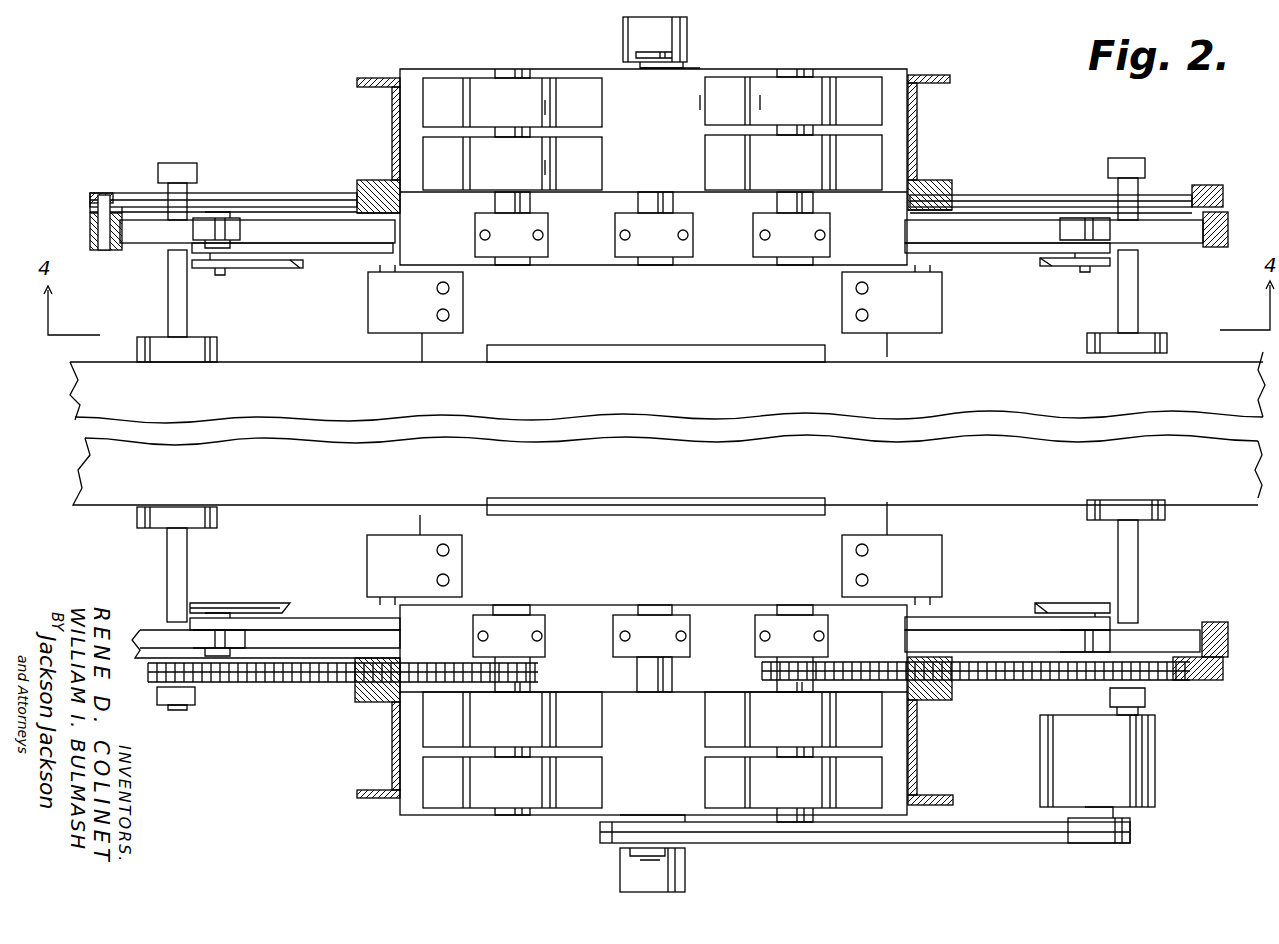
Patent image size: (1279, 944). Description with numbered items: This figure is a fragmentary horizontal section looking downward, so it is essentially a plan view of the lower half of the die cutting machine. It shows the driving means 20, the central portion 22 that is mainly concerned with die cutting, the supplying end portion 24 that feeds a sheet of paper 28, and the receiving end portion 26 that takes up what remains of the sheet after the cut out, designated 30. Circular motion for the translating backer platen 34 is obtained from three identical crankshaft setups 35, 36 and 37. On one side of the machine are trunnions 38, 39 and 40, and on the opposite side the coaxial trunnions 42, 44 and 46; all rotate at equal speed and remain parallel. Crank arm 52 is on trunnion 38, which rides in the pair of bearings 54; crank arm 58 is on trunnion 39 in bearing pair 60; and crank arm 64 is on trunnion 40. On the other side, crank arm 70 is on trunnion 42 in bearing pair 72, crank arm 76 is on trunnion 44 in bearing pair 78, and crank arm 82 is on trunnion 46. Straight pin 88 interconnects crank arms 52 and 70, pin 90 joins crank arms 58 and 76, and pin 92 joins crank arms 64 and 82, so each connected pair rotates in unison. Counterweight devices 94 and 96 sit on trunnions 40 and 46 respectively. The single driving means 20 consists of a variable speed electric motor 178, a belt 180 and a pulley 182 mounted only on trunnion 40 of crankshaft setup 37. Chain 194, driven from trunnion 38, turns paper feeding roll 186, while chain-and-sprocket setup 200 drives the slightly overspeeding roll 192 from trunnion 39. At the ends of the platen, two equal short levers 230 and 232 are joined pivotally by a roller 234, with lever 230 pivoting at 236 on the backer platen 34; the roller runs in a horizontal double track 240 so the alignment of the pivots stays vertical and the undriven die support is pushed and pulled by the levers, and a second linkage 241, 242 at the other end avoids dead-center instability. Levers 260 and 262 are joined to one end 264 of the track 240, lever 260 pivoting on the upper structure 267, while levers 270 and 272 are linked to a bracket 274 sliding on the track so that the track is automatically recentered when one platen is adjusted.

The driving means 20 is at (1135, 742).
The central portion 22 is at (824, 68).
The supplying end portion 24 is at (150, 345).
The receiving end portion 26 is at (1145, 340).
The sheet of paper 28 is at (104, 506).
The remaining paper 30 is at (1256, 496).
The backer platen 34 is at (887, 520).
The crankshaft setup 35 is at (522, 814).
The crankshaft setup 36 is at (800, 810).
The crankshaft setup 37 is at (685, 878).
The trunnion 38 is at (508, 698).
The trunnion 39 is at (690, 750).
The trunnion 40 is at (672, 673).
The trunnion 42 is at (495, 203).
The trunnion 44 is at (813, 203).
The trunnion 46 is at (673, 203).
The crank arm 52 is at (545, 645).
The pair of bearings 54 is at (573, 762).
The crank arm 58 is at (828, 648).
The bearing pair 60 is at (755, 775).
The crank arm 64 is at (688, 648).
The crank arm 70 is at (475, 235).
The bearing pair 72 is at (545, 167).
The crank arm 76 is at (826, 242).
The bearing pair 78 is at (773, 157).
The crank arm 82 is at (625, 236).
The pin 88 is at (533, 606).
The pin 90 is at (794, 606).
The pin 92 is at (655, 606).
The counterweight device 94 is at (628, 866).
The counterweight device 96 is at (623, 36).
The variable speed electric motor 178 is at (1150, 770).
The belt 180 is at (912, 835).
The pulley 182 is at (700, 843).
The paper feeding roll 186 is at (218, 520).
The roll 192 is at (1165, 508).
The chain 194 is at (260, 682).
The chain-and-sprocket setup 200 is at (1008, 682).
The lever 230 is at (330, 255).
The lever 232 is at (264, 270).
The roller 234 is at (240, 228).
The pivot 236 is at (396, 272).
The horizontal double track 240 is at (295, 214).
The second linkage 241 is at (1070, 267).
The second linkage 242 is at (987, 255).
The lever 260 is at (120, 190).
The lever 262 is at (225, 187).
The end of track 264 is at (100, 255).
The upper structure 267 is at (700, 70).
The lever 270 is at (1180, 190).
The lever 272 is at (1052, 200).
The bracket 274 is at (1205, 252).